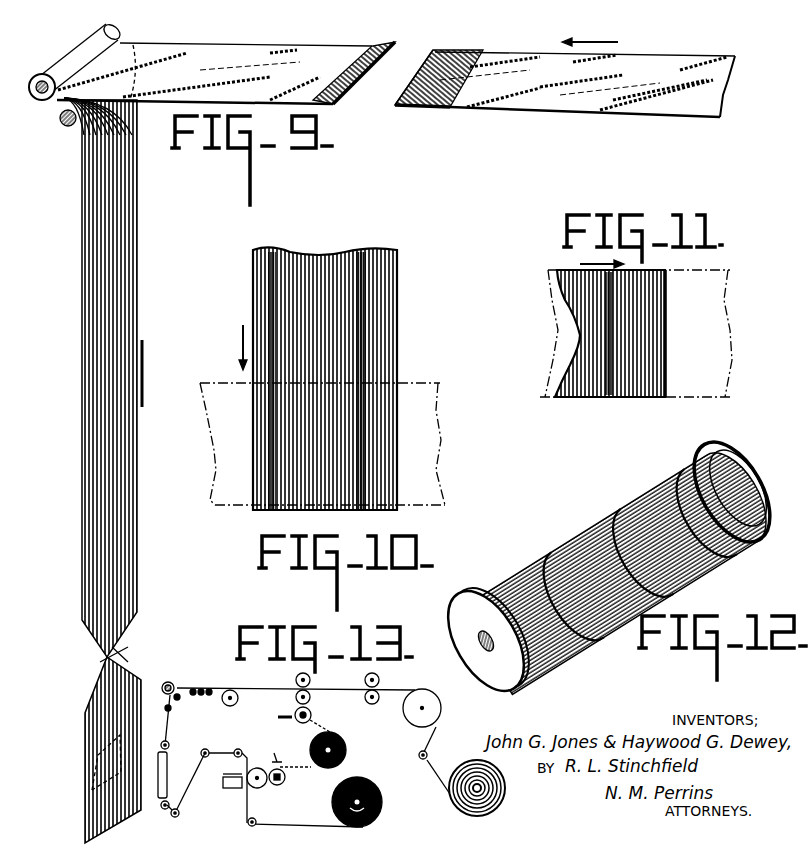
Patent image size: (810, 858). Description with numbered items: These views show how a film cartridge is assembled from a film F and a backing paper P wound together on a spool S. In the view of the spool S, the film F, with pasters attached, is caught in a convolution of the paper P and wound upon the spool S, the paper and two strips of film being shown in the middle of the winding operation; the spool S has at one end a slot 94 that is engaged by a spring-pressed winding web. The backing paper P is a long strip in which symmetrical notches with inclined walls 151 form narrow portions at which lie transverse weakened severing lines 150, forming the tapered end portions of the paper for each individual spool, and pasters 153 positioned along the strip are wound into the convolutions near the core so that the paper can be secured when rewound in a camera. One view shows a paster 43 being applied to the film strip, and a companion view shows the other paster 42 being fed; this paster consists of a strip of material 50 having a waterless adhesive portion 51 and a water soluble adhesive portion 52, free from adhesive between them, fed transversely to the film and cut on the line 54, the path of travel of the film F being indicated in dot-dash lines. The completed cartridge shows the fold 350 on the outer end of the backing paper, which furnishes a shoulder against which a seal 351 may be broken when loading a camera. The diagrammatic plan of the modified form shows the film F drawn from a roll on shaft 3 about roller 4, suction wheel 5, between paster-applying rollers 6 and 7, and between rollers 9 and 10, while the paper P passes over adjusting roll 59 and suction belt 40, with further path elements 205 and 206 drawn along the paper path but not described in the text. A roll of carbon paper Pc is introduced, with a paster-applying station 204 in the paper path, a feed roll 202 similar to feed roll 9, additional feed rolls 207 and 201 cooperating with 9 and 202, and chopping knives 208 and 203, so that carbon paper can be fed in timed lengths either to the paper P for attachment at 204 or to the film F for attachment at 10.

In FIG. 9, the film F is at (312, 60).
In FIG. 10, the film F is at (420, 413).
In FIG. 11, the film F is at (713, 318).
In FIG. 13, the film F is at (430, 775).
In FIG. 9, the spool S is at (50, 74).
In FIG. 12, the spool S is at (473, 603).
In FIG. 13, the spool S is at (171, 684).
In FIG. 9, the paper P is at (96, 225).
In FIG. 12, the paper P is at (687, 492).
In FIG. 13, the paper P is at (380, 797).
In FIG. 13, the carbon paper Pc is at (347, 748).
In FIG. 9, the paster 42 is at (468, 62).
In FIG. 10, the paster 42 is at (305, 490).
In FIG. 9, the paster 43 is at (365, 58).
In FIG. 11, the paster 43 is at (633, 283).
In FIG. 10, the strip of material 50 is at (333, 263).
In FIG. 10, the waterless adhesive portion 51 is at (372, 267).
In FIG. 10, the water soluble adhesive portion 52 is at (269, 263).
In FIG. 10, the cutting line 54 is at (350, 380).
In FIG. 12, the slot 94 is at (480, 644).
In FIG. 9, the weakened severing lines 150 is at (128, 653).
In FIG. 9, the inclined walls 151 is at (135, 622).
In FIG. 12, the inclined walls 151 is at (567, 547).
In FIG. 9, the pasters 153 is at (93, 783).
In FIG. 12, the fold 350 is at (693, 563).
In FIG. 12, the seal 351 is at (608, 520).
In FIG. 13, the shaft 3 is at (485, 789).
In FIG. 13, the roller 4 is at (418, 753).
In FIG. 13, the suction wheel 5 is at (442, 703).
In FIG. 13, the paster-applying roller 6 is at (379, 700).
In FIG. 13, the paster-applying roller 7 is at (379, 677).
In FIG. 13, the paster-applying roller 9 is at (296, 698).
In FIG. 13, the paster-applying roller 10 is at (296, 677).
In FIG. 13, the suction belt 40 is at (172, 755).
In FIG. 13, the adjusting roll 59 is at (258, 821).
In FIG. 13, the feed roll 201 is at (286, 778).
In FIG. 13, the feed roll 202 is at (265, 787).
In FIG. 13, the chopping knife 203 is at (290, 749).
In FIG. 13, the paster-applying station 204 is at (238, 790).
In FIG. 13, the guide pins 205 is at (210, 748).
In FIG. 13, the guide pin 206 is at (175, 817).
In FIG. 13, the feed roll 207 is at (312, 716).
In FIG. 13, the chopping knife 208 is at (257, 707).